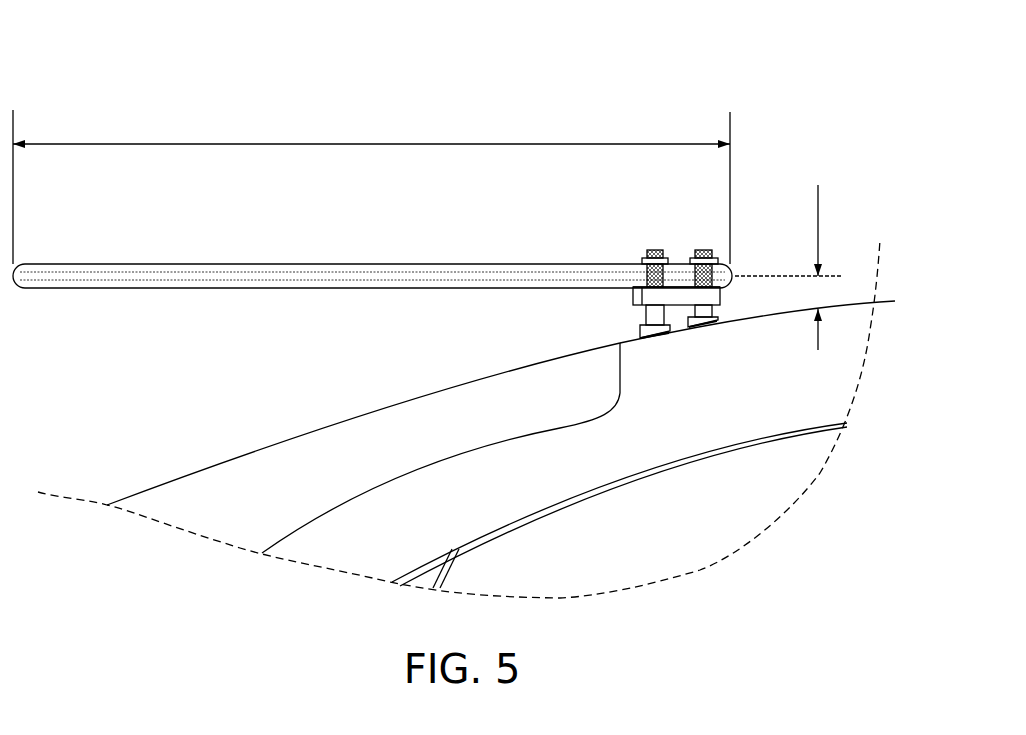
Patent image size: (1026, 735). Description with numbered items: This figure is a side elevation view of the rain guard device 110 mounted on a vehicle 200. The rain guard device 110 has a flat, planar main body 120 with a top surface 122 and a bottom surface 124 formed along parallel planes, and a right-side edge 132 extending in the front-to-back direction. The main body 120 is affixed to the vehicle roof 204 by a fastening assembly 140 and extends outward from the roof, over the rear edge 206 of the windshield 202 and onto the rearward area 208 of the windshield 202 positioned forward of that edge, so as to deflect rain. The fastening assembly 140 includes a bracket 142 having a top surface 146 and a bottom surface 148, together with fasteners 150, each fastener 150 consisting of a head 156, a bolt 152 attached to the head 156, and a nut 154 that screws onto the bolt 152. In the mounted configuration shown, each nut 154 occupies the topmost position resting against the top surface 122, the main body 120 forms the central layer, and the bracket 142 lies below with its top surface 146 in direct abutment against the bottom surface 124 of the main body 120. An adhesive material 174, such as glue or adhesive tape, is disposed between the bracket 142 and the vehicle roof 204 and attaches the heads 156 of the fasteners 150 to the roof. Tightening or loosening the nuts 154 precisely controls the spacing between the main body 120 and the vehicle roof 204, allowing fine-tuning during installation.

The rain guard device 110 is at (157, 50).
The main body 120 is at (113, 297).
The top surface 122 is at (60, 264).
The bottom surface 124 is at (177, 289).
The right-side edge 132 is at (282, 280).
The top surface of bracket 146 is at (551, 268).
The fastening assembly 140 is at (617, 305).
The bracket 142 is at (722, 295).
The bottom surface of bracket 148 is at (705, 332).
The fastener 150 is at (637, 313).
The bolt 152 is at (652, 250).
The nut 154 is at (640, 260).
The head 156 is at (630, 328).
The adhesive material 174 is at (720, 322).
The vehicle 200 is at (253, 413).
The windshield 202 is at (140, 502).
The vehicle roof 204 is at (890, 300).
The rear edge of windshield 206 is at (652, 335).
The rearward area of windshield 208 is at (380, 405).